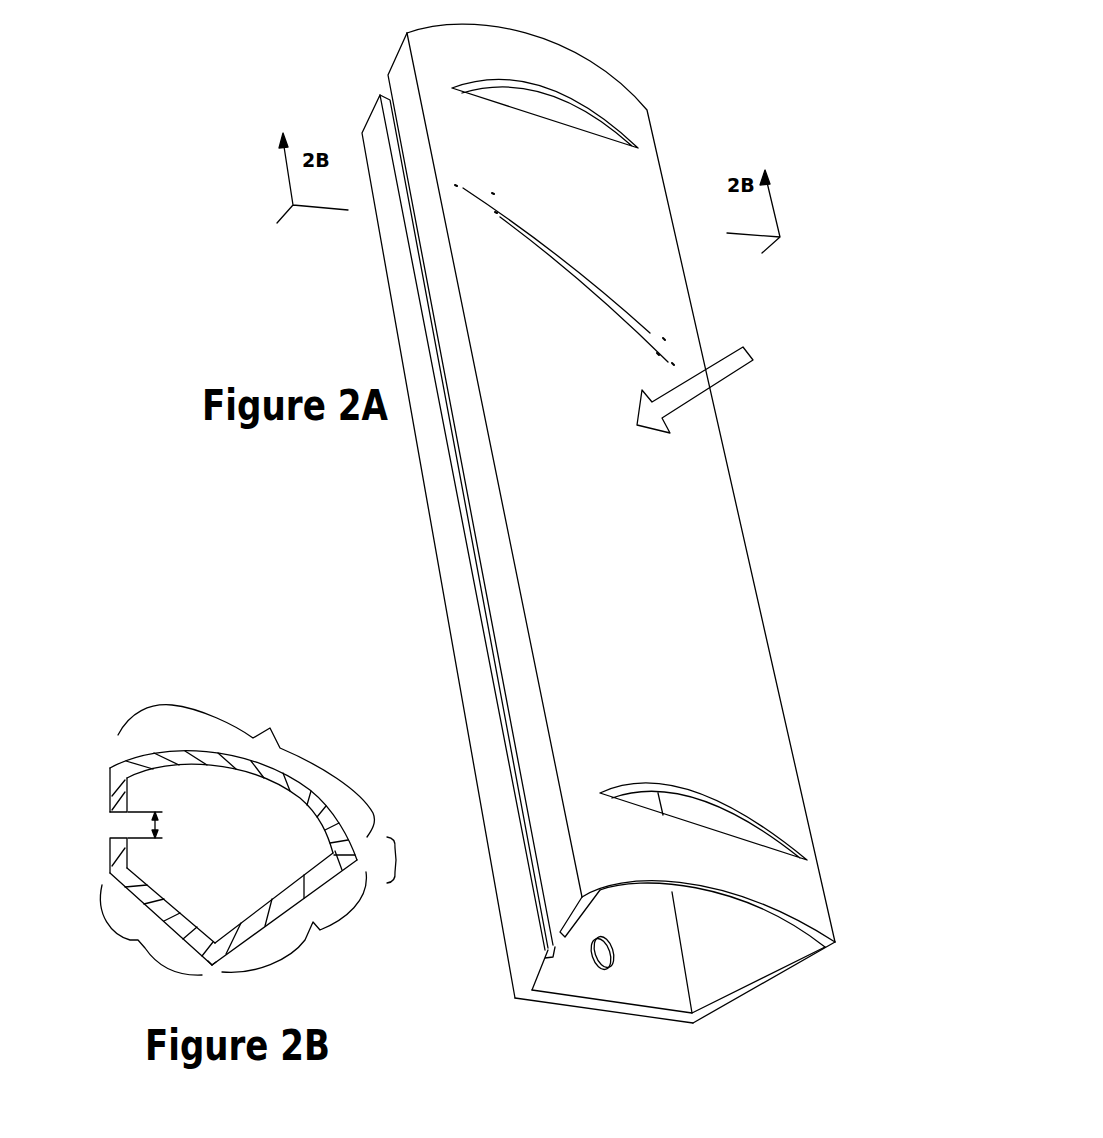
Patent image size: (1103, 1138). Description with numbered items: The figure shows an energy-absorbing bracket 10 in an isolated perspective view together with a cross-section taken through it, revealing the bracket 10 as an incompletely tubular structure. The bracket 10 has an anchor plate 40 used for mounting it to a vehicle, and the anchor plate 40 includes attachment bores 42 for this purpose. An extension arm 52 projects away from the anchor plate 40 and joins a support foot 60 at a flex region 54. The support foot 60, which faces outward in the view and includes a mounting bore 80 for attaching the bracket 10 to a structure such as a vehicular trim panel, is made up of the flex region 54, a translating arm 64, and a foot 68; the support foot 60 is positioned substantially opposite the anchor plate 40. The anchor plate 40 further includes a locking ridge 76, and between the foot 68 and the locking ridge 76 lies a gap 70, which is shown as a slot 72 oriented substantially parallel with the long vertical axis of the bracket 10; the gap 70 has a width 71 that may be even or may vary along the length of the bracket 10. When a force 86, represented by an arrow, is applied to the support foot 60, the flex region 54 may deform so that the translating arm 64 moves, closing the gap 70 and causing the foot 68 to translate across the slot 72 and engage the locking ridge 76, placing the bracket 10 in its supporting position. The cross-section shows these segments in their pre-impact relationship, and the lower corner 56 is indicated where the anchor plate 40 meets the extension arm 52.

In FIG. 2A, the energy-absorbing bracket 10 is at (633, 553).
In FIG. 2B, the energy-absorbing bracket 10 is at (238, 838).
In FIG. 2A, the anchor plate 40 is at (642, 990).
In FIG. 2B, the anchor plate 40 is at (157, 921).
In FIG. 2A, the attachment bores 42 is at (603, 970).
In FIG. 2A, the extension arm 52 is at (719, 947).
In FIG. 2B, the extension arm 52 is at (289, 911).
In FIG. 2A, the flex region 54 is at (823, 950).
In FIG. 2B, the flex region 54 is at (410, 860).
In FIG. 2A, the bottom corner 56 is at (693, 1023).
In FIG. 2B, the bottom corner 56 is at (212, 965).
In FIG. 2A, the support foot 60 is at (768, 279).
In FIG. 2B, the support foot 60 is at (253, 694).
In FIG. 2A, the translating arm 64 is at (637, 525).
In FIG. 2B, the translating arm 64 is at (233, 784).
In FIG. 2A, the foot 68 is at (548, 750).
In FIG. 2B, the foot 68 is at (117, 785).
In FIG. 2A, the gap 70 is at (478, 927).
In FIG. 2B, the gap 70 is at (85, 802).
In FIG. 2B, the width 71 is at (158, 825).
In FIG. 2A, the slot 72 is at (553, 945).
In FIG. 2B, the slot 72 is at (113, 830).
In FIG. 2A, the locking ridge 76 is at (478, 713).
In FIG. 2B, the locking ridge 76 is at (110, 857).
In FIG. 2A, the mounting bore 80 is at (757, 833).
In FIG. 2A, the force 86 is at (733, 347).